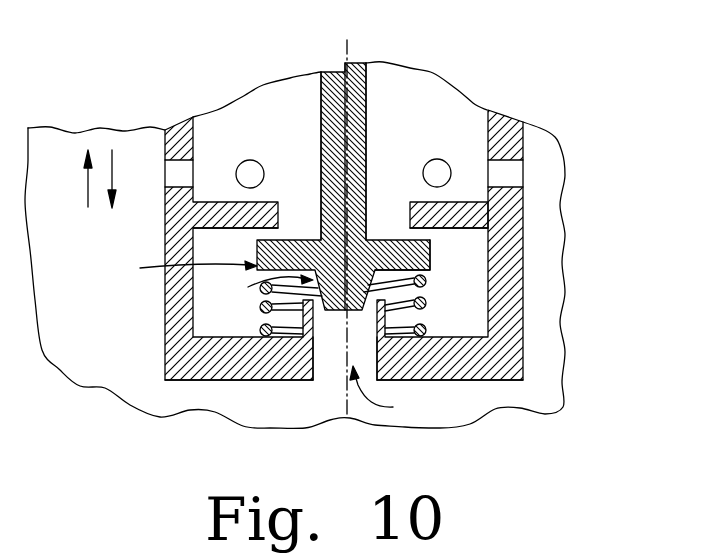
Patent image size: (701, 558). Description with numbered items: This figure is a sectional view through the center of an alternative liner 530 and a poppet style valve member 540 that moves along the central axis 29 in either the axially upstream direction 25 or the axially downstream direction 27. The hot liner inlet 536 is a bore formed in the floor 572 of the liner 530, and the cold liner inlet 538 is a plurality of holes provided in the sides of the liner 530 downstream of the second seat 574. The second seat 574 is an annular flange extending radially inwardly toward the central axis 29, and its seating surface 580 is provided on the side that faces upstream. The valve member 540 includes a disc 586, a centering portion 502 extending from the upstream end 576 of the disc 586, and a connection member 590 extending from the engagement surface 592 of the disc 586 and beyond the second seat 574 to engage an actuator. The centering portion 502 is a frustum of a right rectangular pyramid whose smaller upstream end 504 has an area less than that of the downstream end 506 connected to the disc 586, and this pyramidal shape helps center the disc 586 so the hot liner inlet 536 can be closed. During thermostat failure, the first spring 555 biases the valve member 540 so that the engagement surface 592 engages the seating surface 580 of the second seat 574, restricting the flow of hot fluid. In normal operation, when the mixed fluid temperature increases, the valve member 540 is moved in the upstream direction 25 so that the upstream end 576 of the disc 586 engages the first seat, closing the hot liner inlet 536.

The axially upstream direction 25 is at (113, 165).
The axially downstream direction 27 is at (88, 200).
The central axis 29 is at (350, 52).
The centering portion 502 is at (260, 289).
The upstream end of centering portion 504 is at (323, 313).
The downstream end of centering portion 506 is at (427, 298).
The liner 530 is at (513, 320).
The hot liner inlet 536 is at (395, 394).
The cold liner inlet 538 is at (248, 163).
The valve member 540 is at (255, 253).
The first spring 555 is at (272, 306).
The floor 572 is at (185, 380).
The second seat 574 is at (468, 200).
The upstream end of disc 576 is at (176, 270).
The seating surface 580 is at (268, 238).
The disc 586 is at (422, 255).
The connection member 590 is at (332, 123).
The engagement surface 592 is at (396, 239).